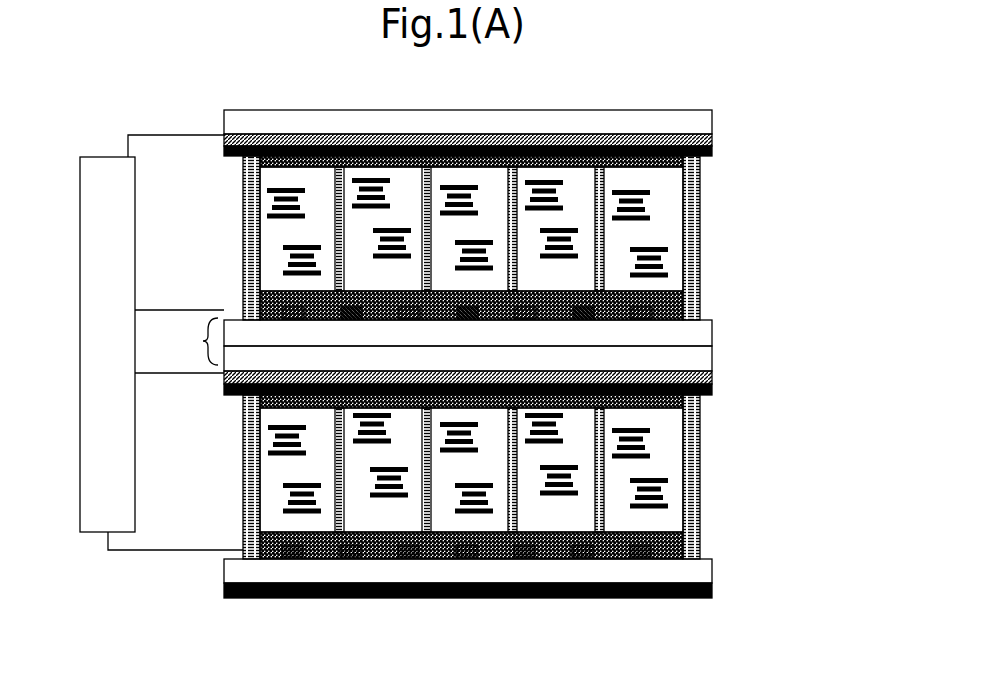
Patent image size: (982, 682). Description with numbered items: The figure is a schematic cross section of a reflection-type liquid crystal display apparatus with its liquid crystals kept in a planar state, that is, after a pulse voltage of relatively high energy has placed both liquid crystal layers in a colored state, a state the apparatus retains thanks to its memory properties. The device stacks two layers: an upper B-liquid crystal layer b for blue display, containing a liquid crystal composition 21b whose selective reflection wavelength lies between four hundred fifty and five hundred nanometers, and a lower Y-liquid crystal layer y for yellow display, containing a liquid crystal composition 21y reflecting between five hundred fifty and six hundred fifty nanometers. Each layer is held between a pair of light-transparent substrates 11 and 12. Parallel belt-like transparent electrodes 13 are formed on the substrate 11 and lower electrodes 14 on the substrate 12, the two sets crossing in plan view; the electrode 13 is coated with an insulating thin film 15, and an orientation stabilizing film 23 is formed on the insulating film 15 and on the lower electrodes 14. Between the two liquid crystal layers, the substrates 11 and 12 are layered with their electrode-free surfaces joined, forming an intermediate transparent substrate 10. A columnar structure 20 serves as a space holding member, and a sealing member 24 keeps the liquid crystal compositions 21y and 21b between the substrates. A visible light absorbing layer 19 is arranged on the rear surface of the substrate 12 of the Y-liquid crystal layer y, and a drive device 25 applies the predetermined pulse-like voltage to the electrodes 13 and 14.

The intermediate transparent substrate 10 is at (191, 341).
The transparent substrate 11 is at (702, 127).
The transparent substrate 12 is at (700, 339).
The transparent belt-like electrode 13 is at (715, 142).
The transparent belt-like electrode 14 is at (700, 317).
The insulating thin film 15 is at (715, 152).
The visible light absorbing layer 19 is at (712, 592).
The columnar structure 20 is at (512, 168).
The liquid crystal composition 21b is at (654, 203).
The liquid crystal composition 21y is at (654, 445).
The orientation stabilizing film 23 is at (672, 147).
The sealing member 24 is at (698, 245).
The drive device 25 is at (122, 362).
The B-liquid crystal layer b is at (678, 232).
The Y-liquid crystal layer y is at (676, 468).